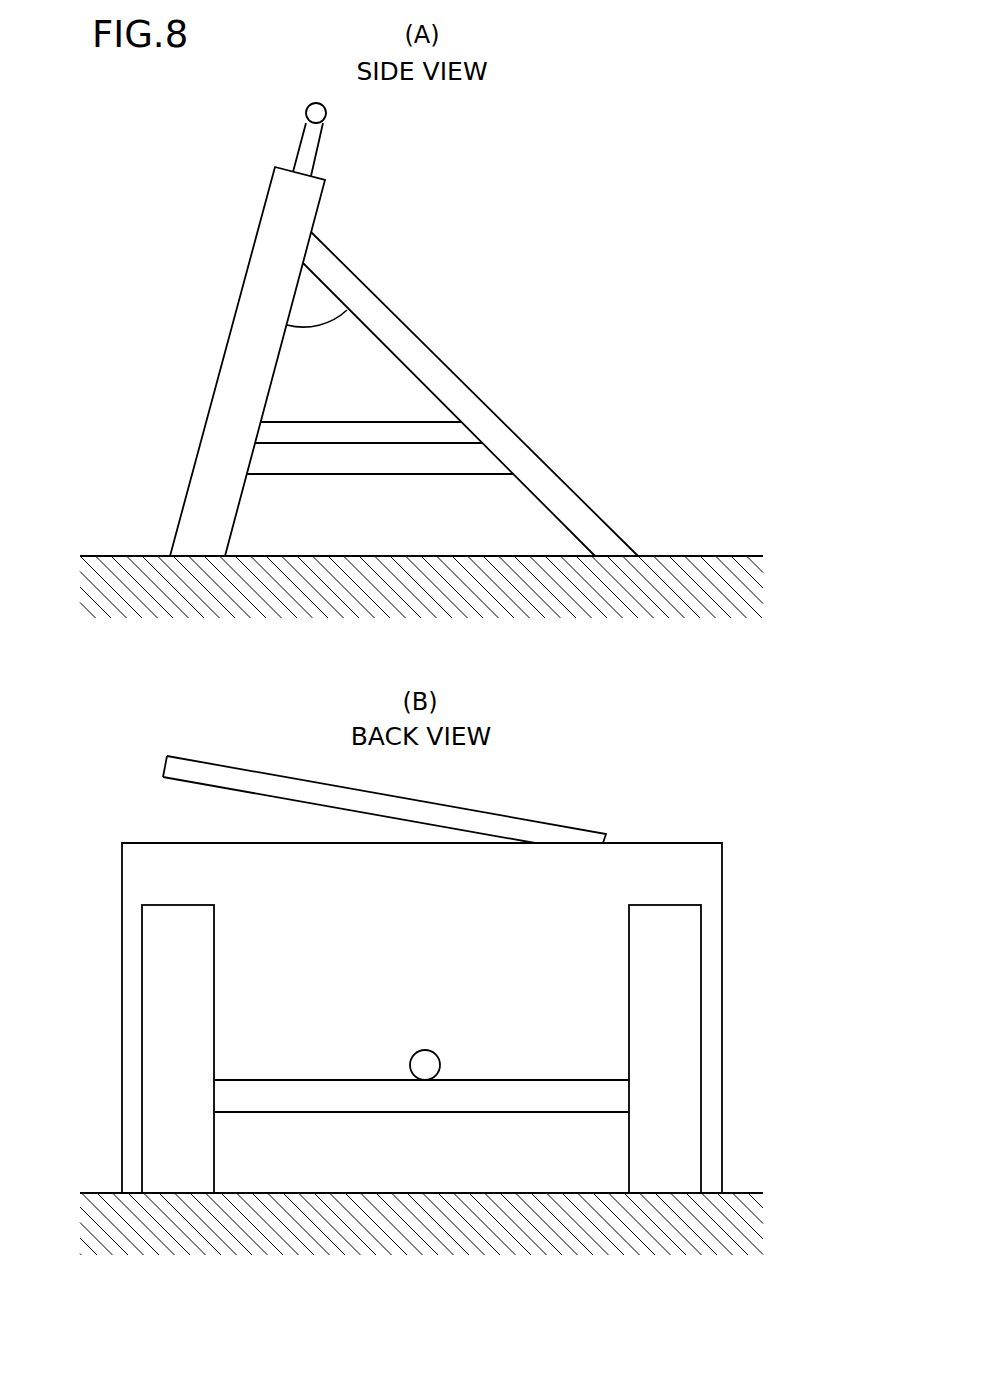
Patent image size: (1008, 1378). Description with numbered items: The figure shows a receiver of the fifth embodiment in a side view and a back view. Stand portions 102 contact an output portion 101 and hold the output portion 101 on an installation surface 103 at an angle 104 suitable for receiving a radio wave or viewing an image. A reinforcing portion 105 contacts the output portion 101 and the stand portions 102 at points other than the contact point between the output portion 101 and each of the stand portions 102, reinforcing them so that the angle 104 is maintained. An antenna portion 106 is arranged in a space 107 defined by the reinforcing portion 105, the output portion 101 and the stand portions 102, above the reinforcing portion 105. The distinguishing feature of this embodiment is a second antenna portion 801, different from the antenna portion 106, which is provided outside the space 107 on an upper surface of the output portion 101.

The output portion 101 is at (234, 316).
The stand portions 102 is at (475, 392).
The installation surface 103 is at (737, 556).
The angle 104 is at (320, 320).
The reinforcing portion 105 is at (403, 474).
The antenna portion 106 is at (360, 422).
The space 107 is at (380, 372).
The second antenna portion 801 is at (300, 145).